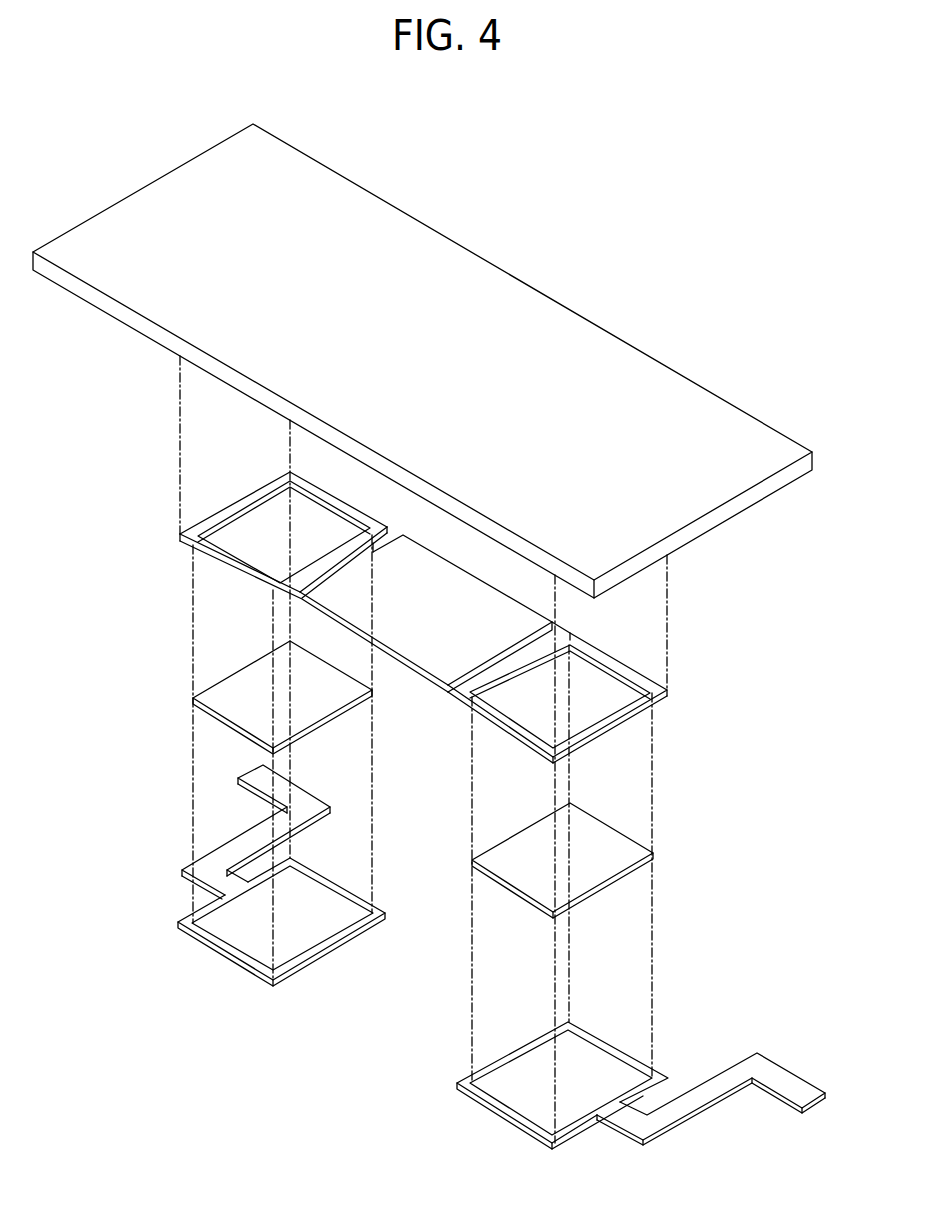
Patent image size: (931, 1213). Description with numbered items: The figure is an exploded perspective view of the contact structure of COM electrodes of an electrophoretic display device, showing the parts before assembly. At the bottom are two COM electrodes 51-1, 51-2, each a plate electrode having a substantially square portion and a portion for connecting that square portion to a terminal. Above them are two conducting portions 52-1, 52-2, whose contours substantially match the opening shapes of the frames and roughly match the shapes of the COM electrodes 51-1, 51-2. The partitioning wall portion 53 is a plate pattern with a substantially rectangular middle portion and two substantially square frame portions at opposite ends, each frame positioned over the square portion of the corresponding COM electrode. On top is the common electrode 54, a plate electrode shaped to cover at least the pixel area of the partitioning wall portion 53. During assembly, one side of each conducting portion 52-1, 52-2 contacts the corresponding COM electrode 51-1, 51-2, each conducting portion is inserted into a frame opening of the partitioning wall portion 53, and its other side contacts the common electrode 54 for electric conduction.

The common electrode 54 is at (558, 329).
The partitioning wall portion 53 is at (642, 673).
The conducting portion 52-1 is at (330, 717).
The conducting portion 52-2 is at (587, 837).
The COM electrode 51-1 is at (217, 940).
The COM electrode 51-2 is at (502, 1102).